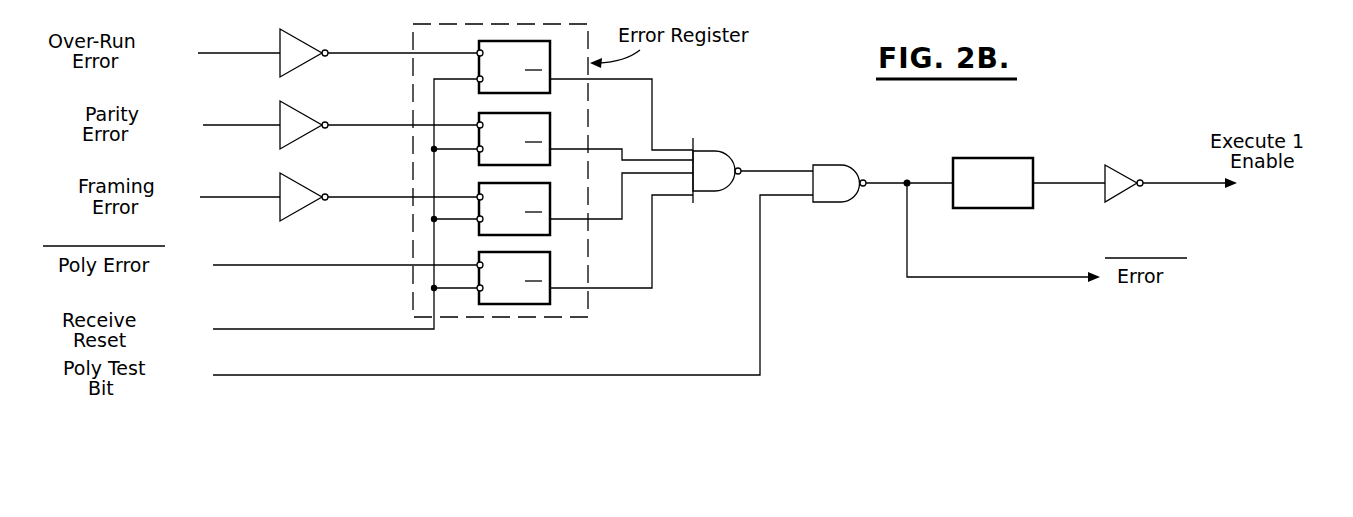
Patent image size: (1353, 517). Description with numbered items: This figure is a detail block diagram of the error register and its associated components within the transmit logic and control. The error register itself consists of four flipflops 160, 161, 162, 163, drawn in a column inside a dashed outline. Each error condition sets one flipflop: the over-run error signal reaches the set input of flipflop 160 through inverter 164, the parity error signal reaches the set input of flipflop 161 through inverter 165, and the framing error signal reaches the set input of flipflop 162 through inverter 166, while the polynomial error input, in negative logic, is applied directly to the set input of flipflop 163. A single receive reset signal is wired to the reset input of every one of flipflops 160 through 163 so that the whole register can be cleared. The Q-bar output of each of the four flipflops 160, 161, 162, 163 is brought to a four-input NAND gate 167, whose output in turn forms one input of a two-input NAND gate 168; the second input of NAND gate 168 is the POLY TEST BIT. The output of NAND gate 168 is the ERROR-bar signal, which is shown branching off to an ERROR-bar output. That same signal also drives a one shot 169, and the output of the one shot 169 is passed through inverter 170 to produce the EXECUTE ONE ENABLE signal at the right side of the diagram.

The flipflop 160 is at (522, 52).
The flipflop 161 is at (540, 127).
The flipflop 162 is at (540, 196).
The flipflop 163 is at (540, 267).
The inverter 164 is at (305, 48).
The inverter 165 is at (304, 122).
The inverter 166 is at (296, 194).
The NAND gate 167 is at (712, 158).
The NAND gate 168 is at (832, 172).
The one shot 169 is at (998, 158).
The inverter 170 is at (1115, 166).